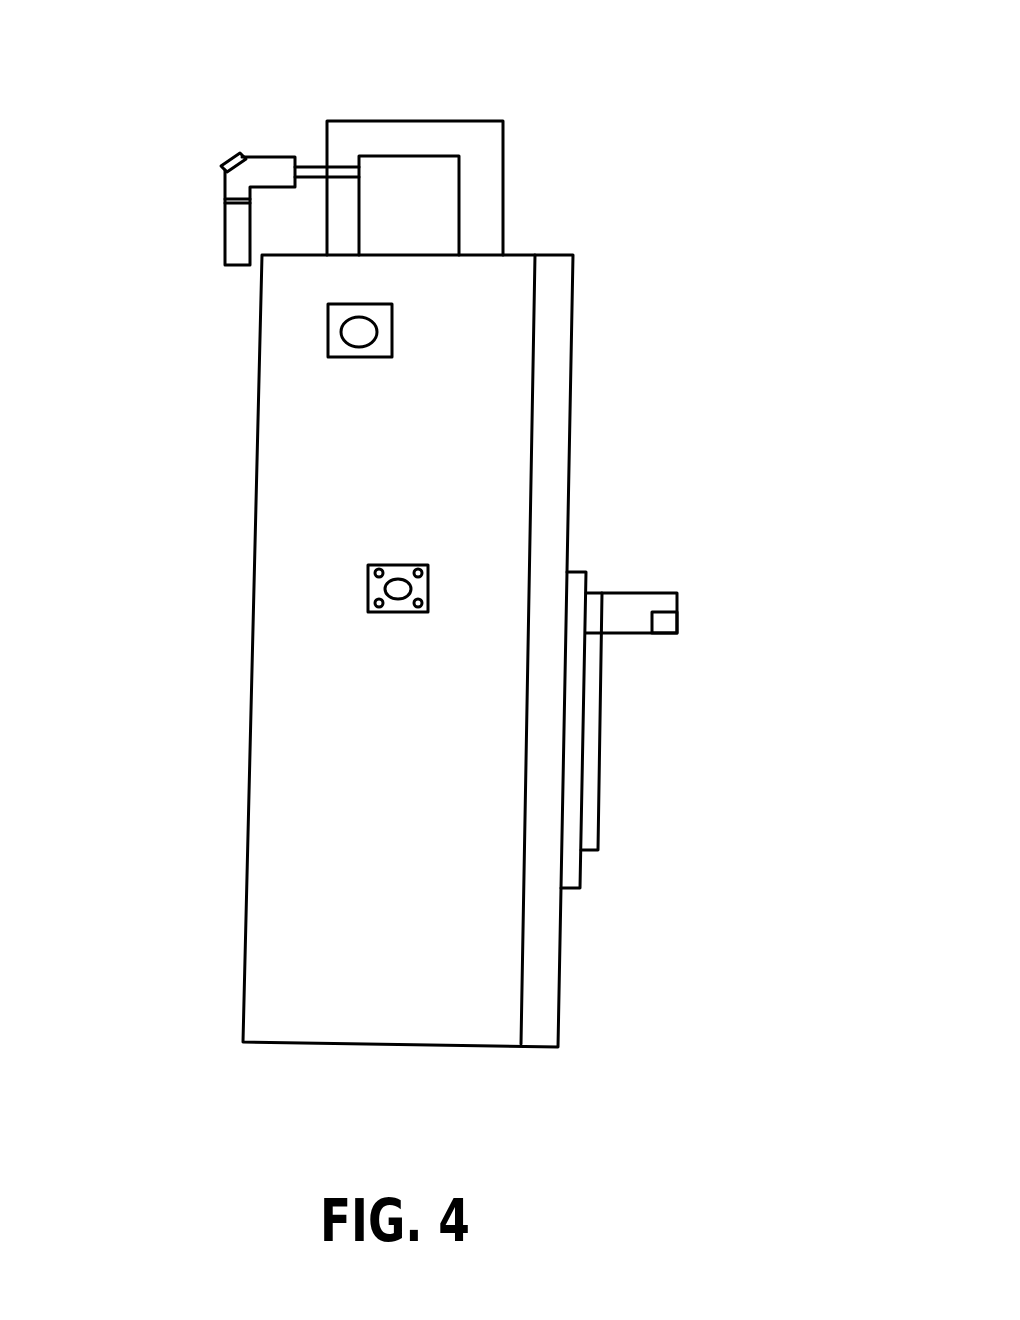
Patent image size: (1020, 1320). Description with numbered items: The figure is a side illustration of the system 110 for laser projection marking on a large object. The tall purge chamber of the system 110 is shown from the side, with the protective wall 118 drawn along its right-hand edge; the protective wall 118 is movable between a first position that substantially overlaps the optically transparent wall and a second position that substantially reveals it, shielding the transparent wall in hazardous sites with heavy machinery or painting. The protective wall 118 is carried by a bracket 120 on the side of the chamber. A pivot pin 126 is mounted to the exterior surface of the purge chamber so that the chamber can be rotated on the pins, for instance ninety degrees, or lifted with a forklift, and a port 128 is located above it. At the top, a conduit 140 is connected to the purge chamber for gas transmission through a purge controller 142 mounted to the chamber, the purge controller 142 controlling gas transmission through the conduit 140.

The system 110 is at (510, 523).
The protective wall 118 is at (598, 850).
The mounting bracket 120 is at (586, 572).
The pivot pin 126 is at (368, 589).
The port 128 is at (328, 335).
The conduit 140 is at (318, 124).
The purge controller 142 is at (427, 120).